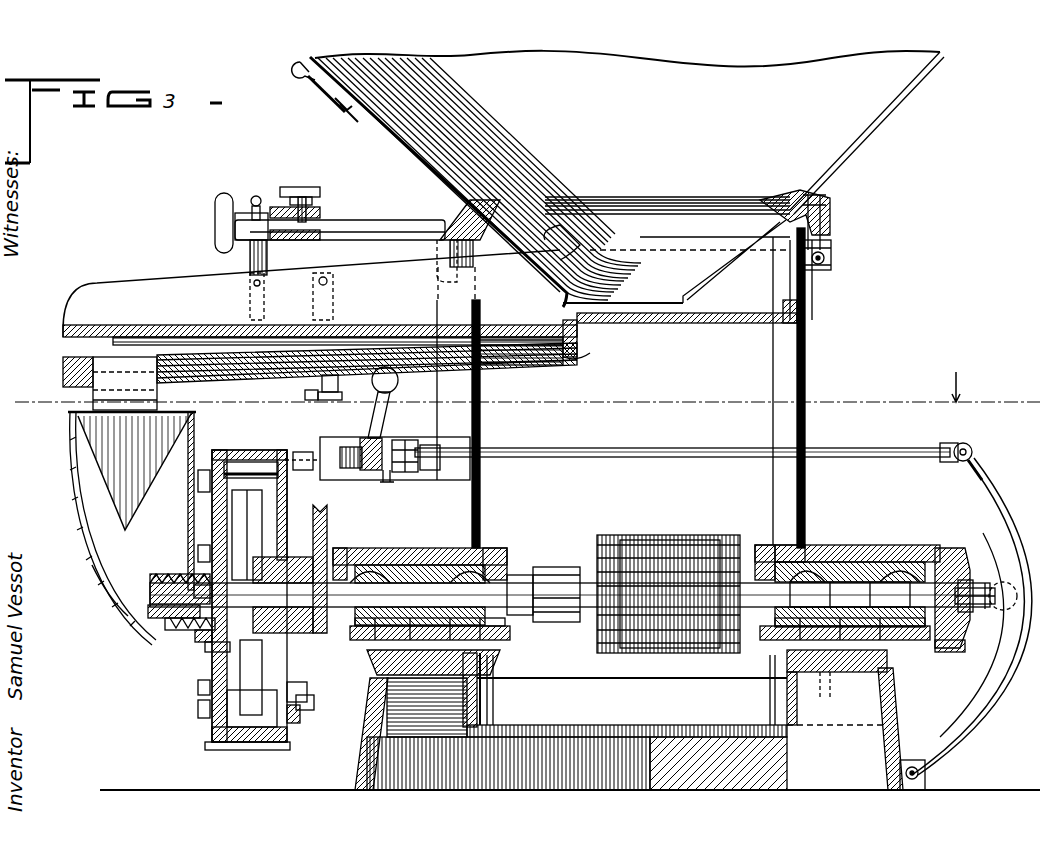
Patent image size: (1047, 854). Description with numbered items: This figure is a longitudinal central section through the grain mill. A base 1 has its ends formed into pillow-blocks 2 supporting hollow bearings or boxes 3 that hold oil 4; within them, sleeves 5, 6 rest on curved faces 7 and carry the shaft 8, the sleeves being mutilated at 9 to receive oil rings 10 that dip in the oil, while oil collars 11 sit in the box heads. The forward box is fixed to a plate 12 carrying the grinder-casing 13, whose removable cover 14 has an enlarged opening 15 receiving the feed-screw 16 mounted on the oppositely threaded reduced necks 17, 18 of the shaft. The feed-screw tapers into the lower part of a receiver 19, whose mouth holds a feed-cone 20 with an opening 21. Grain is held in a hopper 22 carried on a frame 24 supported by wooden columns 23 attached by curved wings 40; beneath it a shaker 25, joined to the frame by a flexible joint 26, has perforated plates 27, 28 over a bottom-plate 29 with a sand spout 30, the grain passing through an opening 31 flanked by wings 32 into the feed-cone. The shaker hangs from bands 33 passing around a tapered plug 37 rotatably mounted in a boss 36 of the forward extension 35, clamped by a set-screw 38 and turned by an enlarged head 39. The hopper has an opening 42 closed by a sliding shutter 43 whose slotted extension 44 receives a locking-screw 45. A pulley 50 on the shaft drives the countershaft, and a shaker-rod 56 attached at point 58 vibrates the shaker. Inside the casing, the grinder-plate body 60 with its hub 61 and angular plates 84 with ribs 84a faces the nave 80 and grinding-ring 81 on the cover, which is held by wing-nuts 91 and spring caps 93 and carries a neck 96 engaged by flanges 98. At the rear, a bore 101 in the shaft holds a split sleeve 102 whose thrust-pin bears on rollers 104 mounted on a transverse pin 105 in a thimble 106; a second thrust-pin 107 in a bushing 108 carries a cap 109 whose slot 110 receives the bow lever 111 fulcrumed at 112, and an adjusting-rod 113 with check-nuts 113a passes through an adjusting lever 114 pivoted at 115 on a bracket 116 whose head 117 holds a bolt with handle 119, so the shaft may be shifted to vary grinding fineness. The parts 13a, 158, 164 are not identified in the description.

The base 1 is at (600, 790).
The pillow-blocks 2 is at (445, 680).
The bearings or boxes 3 is at (393, 565).
The oil 4 is at (505, 635).
The sleeve 5 is at (504, 523).
The sleeve 6 is at (878, 562).
The curved faces 7 is at (423, 565).
The shaft 8 is at (515, 588).
The mutilated portions 9 is at (370, 565).
The oil rings 10 is at (500, 630).
The oil collars 11 is at (505, 560).
The plate 12 is at (330, 525).
The grinder-casing 13 is at (293, 723).
The boss 13a is at (307, 695).
The removable cover 14 is at (235, 748).
The opening 15 is at (185, 600).
The feed-screw 16 is at (165, 620).
The reduced neck 17 is at (215, 652).
The reduced neck 18 is at (178, 630).
The receiver 19 is at (100, 575).
The feed-cone 20 is at (110, 462).
The opening 21 is at (95, 520).
The hopper 22 is at (860, 100).
The columns 23 is at (806, 356).
The frame 24 is at (832, 200).
The shaker 25 is at (712, 323).
The flexible joint 26 is at (833, 260).
The perforated plate 27 is at (392, 326).
The perforated plate 28 is at (556, 360).
The bottom-plate 29 is at (312, 400).
The spout 30 is at (212, 345).
The opening 31 is at (110, 365).
The guards or wings 32 is at (95, 400).
The straps or bands 33 is at (250, 262).
The forward extension 35 is at (372, 220).
The boss 36 is at (275, 207).
The tapered plug 37 is at (250, 200).
The set-screw 38 is at (305, 190).
The enlarged head 39 is at (222, 210).
The curved wings 40 is at (445, 247).
The opening 42 is at (558, 270).
The sliding shutter 43 is at (600, 247).
The slotted upward extension 44 is at (400, 145).
The locking-screw 45 is at (334, 110).
The pulley 50 is at (562, 622).
The shaker-rod 56 is at (330, 400).
The attachment point 58 is at (340, 385).
The body of grinder-plate 60 is at (256, 715).
The hub 61 is at (265, 540).
The nave 80 is at (200, 635).
The grinding-ring 81 is at (222, 727).
The angular plates 84 is at (250, 450).
The rib 84a is at (262, 462).
The wing-nuts 91 is at (204, 470).
The caps 93 is at (310, 712).
The neck 96 is at (196, 588).
The flanges 98 is at (200, 552).
The bore 101 is at (828, 680).
The split sleeve 102 is at (935, 560).
The rollers 104 is at (948, 578).
The transverse pin 105 is at (864, 545).
The thimble 106 is at (948, 652).
The second thrust-pin 107 is at (998, 520).
The bushing 108 is at (990, 700).
The cap 109 is at (995, 610).
The slot 110 is at (965, 590).
The bow lever 111 is at (978, 470).
The fulcrum 112 is at (922, 785).
The adjusting-rod 113 is at (686, 448).
The check-nuts 113a is at (390, 478).
The adjusting lever 114 is at (432, 470).
The pivot 115 is at (368, 440).
The bracket 116 is at (350, 470).
The head 117 is at (405, 440).
The handle 119 is at (398, 385).
The motor core 158 is at (674, 535).
The motor drum 164 is at (628, 535).